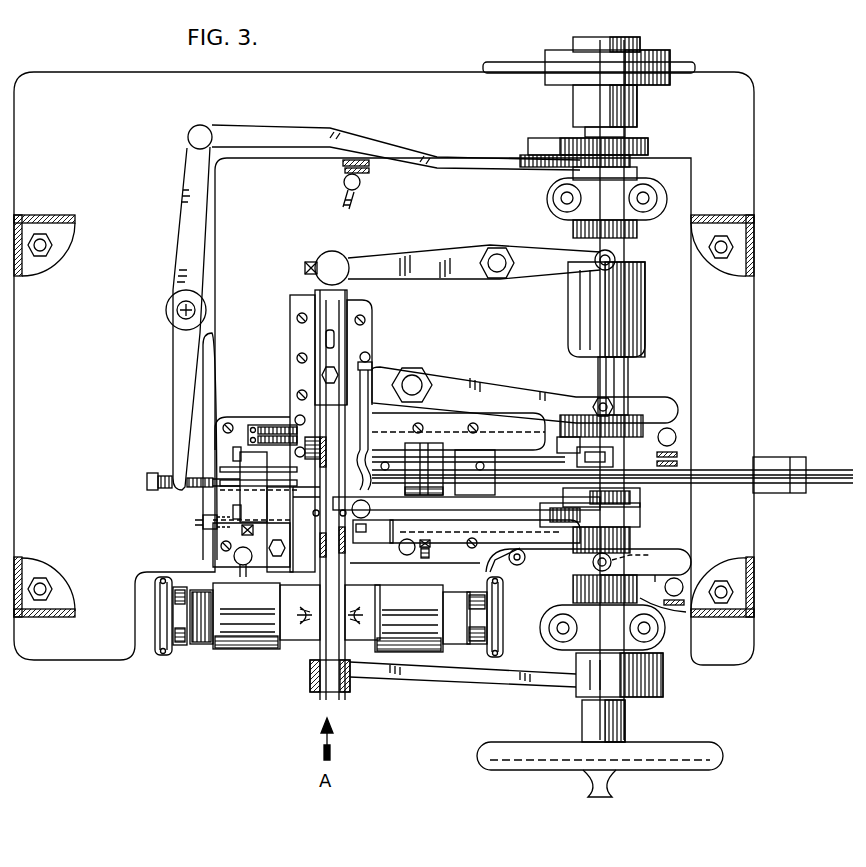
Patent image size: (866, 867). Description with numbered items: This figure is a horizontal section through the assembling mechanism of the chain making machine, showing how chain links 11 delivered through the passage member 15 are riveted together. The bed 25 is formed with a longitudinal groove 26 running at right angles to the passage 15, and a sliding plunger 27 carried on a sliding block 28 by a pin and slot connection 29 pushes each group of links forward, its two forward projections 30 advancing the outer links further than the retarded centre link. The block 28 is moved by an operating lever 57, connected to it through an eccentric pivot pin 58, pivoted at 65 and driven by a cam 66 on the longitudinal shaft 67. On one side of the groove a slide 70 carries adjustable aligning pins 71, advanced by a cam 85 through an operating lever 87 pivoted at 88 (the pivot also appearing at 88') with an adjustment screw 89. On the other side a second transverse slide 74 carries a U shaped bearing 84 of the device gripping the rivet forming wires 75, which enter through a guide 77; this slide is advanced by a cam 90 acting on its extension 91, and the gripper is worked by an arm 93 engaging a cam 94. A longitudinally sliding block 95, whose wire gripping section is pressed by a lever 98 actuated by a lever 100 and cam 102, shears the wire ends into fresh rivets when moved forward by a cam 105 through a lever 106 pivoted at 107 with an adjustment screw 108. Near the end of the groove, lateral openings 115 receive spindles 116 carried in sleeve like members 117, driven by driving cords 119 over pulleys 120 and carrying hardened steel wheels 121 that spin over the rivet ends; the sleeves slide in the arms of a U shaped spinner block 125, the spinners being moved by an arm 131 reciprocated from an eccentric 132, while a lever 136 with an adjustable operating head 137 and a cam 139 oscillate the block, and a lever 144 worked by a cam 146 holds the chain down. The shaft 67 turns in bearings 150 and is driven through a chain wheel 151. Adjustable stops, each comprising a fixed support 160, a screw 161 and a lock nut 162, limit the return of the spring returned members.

The chain links 11 is at (320, 493).
The passage member 15 is at (253, 428).
The bed 25 is at (313, 520).
The longitudinal groove 26 is at (330, 552).
The sliding plunger 27 is at (297, 407).
The sliding block 28 is at (292, 345).
The pin and slot connection 29 is at (292, 390).
The forward projections 30 is at (322, 447).
The operating lever 57 is at (392, 262).
The eccentric or cam shaped pivot pin 58 is at (326, 263).
The pivot 65 is at (497, 257).
The cam 66 is at (630, 300).
The longitudinal shaft 67 is at (610, 370).
The slide 70 is at (253, 482).
The adjustable aligning pins 71 is at (274, 478).
The second transverse slide 74 is at (475, 467).
The rivet forming wires 75 is at (340, 456).
The guide 77 is at (803, 470).
The U shaped bearing 84 is at (427, 469).
The cam 85 is at (650, 147).
The operating lever 87 is at (192, 237).
The pivot 88 is at (396, 146).
The pivot 88' is at (164, 310).
The adjustment screw 89 is at (150, 485).
The cam 90 is at (632, 517).
The extension 91 is at (510, 520).
The arm 93 is at (545, 462).
The cam 94 is at (625, 455).
The longitudinally sliding block 95 is at (362, 528).
The lever 98 is at (360, 470).
The lever 100 is at (493, 510).
The cam 102 is at (635, 497).
The cam 105 is at (578, 422).
The lever 106 is at (525, 395).
The pivot 107 is at (418, 380).
The adjustment screw 108 is at (373, 360).
The lateral openings 115 is at (315, 628).
The spindles 116 is at (283, 628).
The sleeve like members 117 is at (207, 627).
The driving cords 119 is at (163, 655).
The pulleys 120 is at (155, 605).
The hardened steel wheels 121 is at (355, 617).
The U shaped spinner block 125 is at (363, 634).
The arm 131 is at (465, 672).
The eccentric 132 is at (660, 683).
The lever 136 is at (665, 555).
The adjustable operating head 137 is at (427, 546).
The cam 139 is at (668, 585).
The lever 144 is at (520, 577).
The cam 146 is at (686, 612).
The bearings 150 is at (592, 192).
The chain wheel 151 is at (686, 66).
The fixed support 160 is at (361, 186).
The screw 161 is at (343, 195).
The lock nut 162 is at (356, 162).